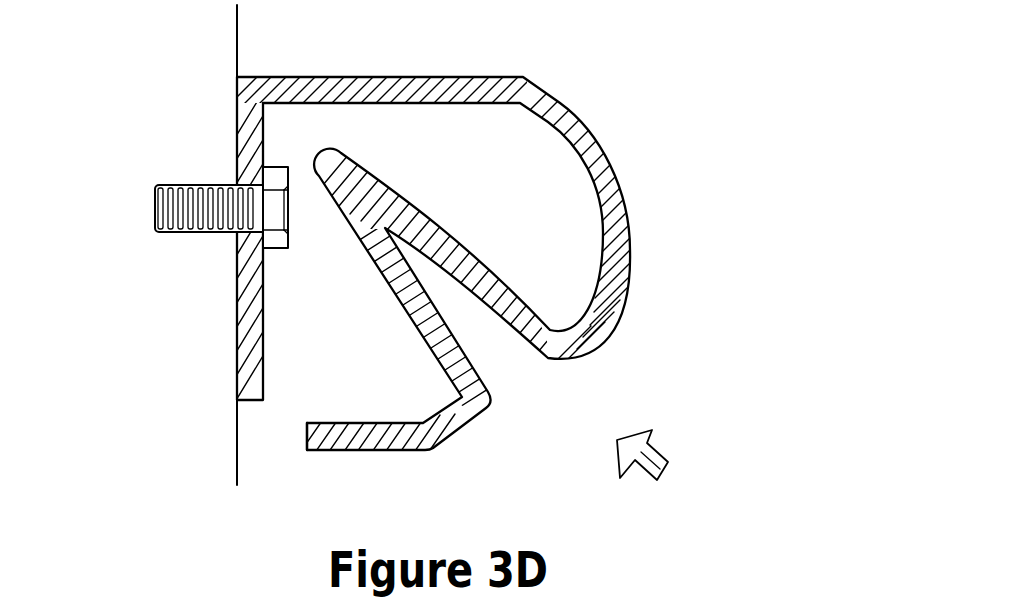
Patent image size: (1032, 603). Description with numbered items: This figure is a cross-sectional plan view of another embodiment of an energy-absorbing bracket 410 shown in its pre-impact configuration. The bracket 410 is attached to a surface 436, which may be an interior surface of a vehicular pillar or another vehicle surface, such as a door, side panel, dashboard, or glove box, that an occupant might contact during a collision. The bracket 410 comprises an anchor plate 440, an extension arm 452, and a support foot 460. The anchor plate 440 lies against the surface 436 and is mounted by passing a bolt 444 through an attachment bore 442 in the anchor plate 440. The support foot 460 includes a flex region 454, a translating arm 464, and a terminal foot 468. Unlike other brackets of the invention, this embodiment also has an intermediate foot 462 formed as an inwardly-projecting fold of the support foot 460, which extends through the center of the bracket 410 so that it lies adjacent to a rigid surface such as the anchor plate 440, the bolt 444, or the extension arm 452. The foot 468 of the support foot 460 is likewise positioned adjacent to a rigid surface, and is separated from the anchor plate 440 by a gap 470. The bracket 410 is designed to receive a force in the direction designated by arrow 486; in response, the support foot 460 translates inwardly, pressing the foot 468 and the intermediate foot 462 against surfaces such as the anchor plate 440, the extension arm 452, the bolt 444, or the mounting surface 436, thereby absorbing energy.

The energy-absorbing bracket 410 is at (710, 169).
The surface 436 is at (207, 372).
The anchor plate 440 is at (250, 140).
The attachment bore 442 is at (249, 237).
The bolt 444 is at (166, 207).
The extension arm 452 is at (408, 90).
The flex region 454 is at (548, 62).
The support foot 460 is at (697, 266).
The intermediate foot 462 is at (565, 382).
The translating arm 464 is at (618, 218).
The foot 468 is at (377, 443).
The gap 470 is at (295, 455).
The arrow 486 is at (666, 478).